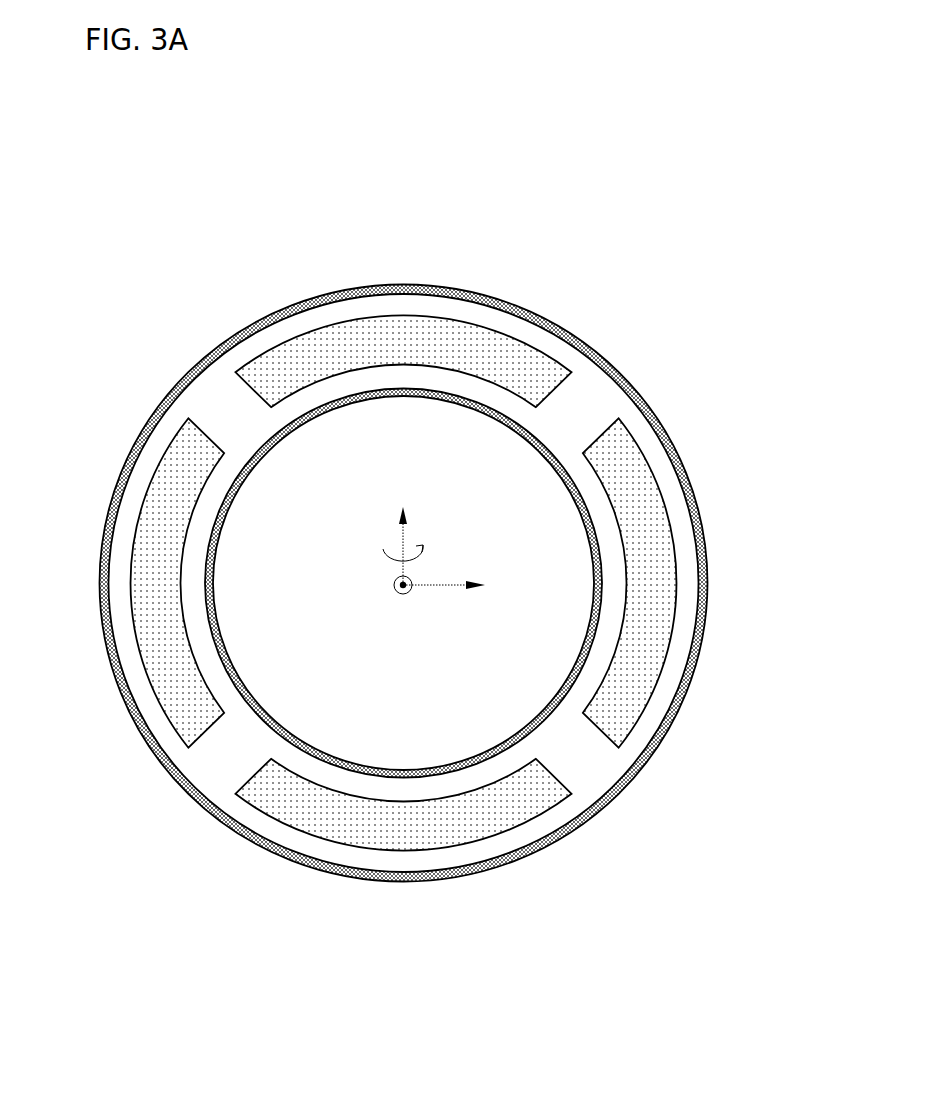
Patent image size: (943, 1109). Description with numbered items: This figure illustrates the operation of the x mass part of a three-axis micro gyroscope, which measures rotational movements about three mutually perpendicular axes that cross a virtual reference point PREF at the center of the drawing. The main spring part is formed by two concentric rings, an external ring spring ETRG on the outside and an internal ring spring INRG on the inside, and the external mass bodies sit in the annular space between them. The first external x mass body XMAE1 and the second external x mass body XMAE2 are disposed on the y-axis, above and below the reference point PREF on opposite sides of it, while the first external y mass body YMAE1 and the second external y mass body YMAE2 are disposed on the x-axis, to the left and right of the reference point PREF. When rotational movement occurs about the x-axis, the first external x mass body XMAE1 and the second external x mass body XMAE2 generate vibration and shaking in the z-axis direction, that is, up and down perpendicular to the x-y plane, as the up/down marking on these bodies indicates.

The external ring spring ETRG is at (614, 372).
The internal ring spring INRG is at (263, 722).
The first external x mass body XMAE1 is at (453, 318).
The second external x mass body XMAE2 is at (350, 848).
The first external y mass body YMAE1 is at (133, 534).
The second external y mass body YMAE2 is at (676, 633).
The virtual reference point PREF is at (408, 588).